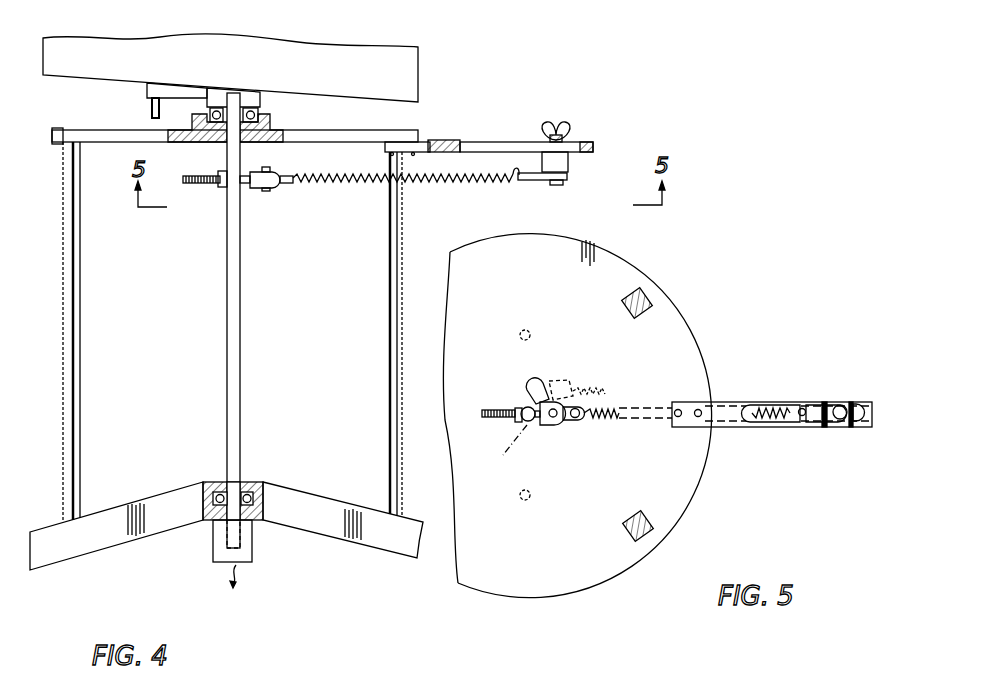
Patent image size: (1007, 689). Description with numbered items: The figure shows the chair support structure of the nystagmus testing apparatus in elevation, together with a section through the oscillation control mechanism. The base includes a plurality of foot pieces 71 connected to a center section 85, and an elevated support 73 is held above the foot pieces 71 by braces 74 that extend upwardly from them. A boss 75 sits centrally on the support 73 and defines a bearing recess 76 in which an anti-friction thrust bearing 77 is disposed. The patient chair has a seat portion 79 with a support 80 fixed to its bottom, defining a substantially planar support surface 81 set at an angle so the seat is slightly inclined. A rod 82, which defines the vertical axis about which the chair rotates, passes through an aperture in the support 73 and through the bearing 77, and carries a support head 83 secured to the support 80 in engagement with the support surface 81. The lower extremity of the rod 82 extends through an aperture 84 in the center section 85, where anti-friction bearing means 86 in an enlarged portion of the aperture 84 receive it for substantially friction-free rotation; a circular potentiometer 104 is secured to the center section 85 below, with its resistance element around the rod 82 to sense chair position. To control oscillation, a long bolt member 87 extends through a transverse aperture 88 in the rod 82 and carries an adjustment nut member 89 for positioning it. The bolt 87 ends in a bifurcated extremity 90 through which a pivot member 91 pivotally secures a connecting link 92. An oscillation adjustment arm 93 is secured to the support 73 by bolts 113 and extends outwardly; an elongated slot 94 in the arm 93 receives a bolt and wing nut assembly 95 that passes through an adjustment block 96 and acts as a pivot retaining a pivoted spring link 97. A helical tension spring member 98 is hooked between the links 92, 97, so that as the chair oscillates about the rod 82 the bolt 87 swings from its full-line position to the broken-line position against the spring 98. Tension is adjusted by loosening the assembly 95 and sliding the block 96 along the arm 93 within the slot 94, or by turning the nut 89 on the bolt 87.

In FIG. 4, the foot pieces 71 is at (380, 542).
In FIG. 4, the elevated support 73 is at (393, 130).
In FIG. 5, the elevated support 73 is at (665, 342).
In FIG. 4, the braces 74 is at (390, 367).
In FIG. 5, the braces 74 is at (650, 298).
In FIG. 4, the boss 75 is at (270, 118).
In FIG. 4, the bearing recess 76 is at (251, 124).
In FIG. 4, the anti-friction thrust bearing 77 is at (210, 124).
In FIG. 4, the seat portion 79 is at (80, 68).
In FIG. 4, the support 80 is at (147, 88).
In FIG. 4, the support surface 81 is at (180, 100).
In FIG. 4, the rod 82 is at (240, 345).
In FIG. 4, the support head 83 is at (260, 100).
In FIG. 4, the aperture 84 is at (247, 507).
In FIG. 4, the center section 85 is at (263, 493).
In FIG. 4, the anti-friction bearing means 86 is at (205, 490).
In FIG. 4, the bolt member 87 is at (188, 184).
In FIG. 5, the bolt member 87 is at (495, 409).
In FIG. 4, the aperture 88 is at (236, 200).
In FIG. 4, the adjustment nut member 89 is at (222, 188).
In FIG. 4, the bifurcated extremity 90 is at (252, 188).
In FIG. 5, the bifurcated extremity 90 is at (547, 426).
In FIG. 4, the pivot member 91 is at (270, 186).
In FIG. 4, the connecting link 92 is at (287, 170).
In FIG. 5, the connecting link 92 is at (568, 426).
In FIG. 4, the oscillation adjustment arm 93 is at (447, 141).
In FIG. 5, the oscillation adjustment arm 93 is at (718, 402).
In FIG. 4, the elongated slot 94 is at (503, 147).
In FIG. 5, the elongated slot 94 is at (757, 406).
In FIG. 4, the bolt and wing nut assembly 95 is at (573, 128).
In FIG. 4, the adjustment block 96 is at (572, 162).
In FIG. 4, the pivoted spring link 97 is at (533, 181).
In FIG. 5, the pivoted spring link 97 is at (815, 422).
In FIG. 4, the tension spring member 98 is at (440, 183).
In FIG. 5, the tension spring member 98 is at (614, 423).
In FIG. 4, the circular potentiometer 104 is at (257, 562).
In FIG. 4, the bolts 113 is at (383, 155).